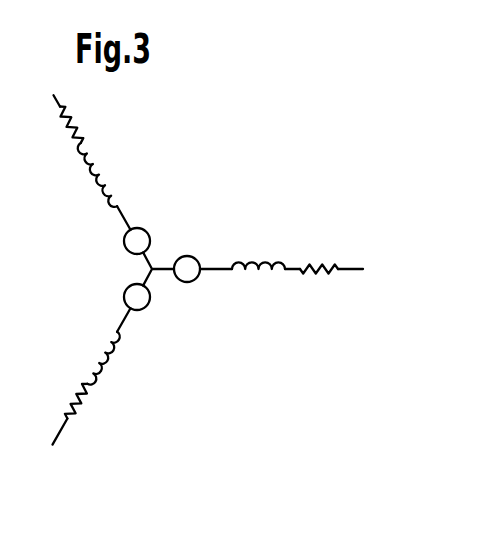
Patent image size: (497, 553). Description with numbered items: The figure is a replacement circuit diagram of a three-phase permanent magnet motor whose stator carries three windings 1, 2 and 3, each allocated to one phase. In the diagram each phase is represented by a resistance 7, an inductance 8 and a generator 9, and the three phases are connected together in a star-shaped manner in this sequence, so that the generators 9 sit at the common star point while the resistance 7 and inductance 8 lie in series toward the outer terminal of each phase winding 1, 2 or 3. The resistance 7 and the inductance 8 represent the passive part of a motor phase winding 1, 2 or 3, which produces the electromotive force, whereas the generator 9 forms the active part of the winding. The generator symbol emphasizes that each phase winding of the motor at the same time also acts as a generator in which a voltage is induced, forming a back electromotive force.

The winding 1 is at (294, 267).
The winding 2 is at (103, 149).
The winding 3 is at (83, 394).
The resistance 7 is at (73, 123).
The inductance 8 is at (102, 182).
The generator 9 is at (150, 232).